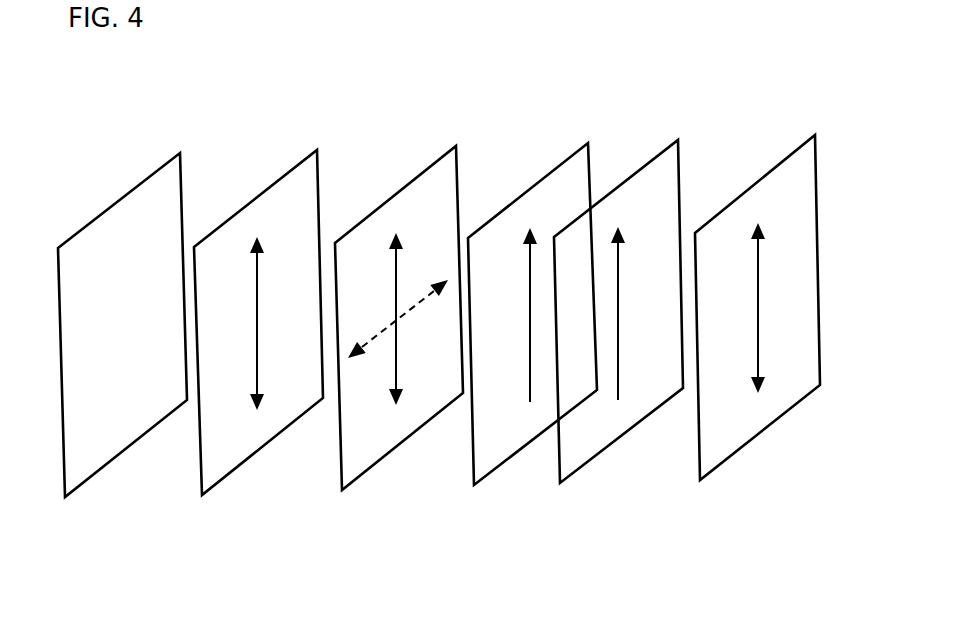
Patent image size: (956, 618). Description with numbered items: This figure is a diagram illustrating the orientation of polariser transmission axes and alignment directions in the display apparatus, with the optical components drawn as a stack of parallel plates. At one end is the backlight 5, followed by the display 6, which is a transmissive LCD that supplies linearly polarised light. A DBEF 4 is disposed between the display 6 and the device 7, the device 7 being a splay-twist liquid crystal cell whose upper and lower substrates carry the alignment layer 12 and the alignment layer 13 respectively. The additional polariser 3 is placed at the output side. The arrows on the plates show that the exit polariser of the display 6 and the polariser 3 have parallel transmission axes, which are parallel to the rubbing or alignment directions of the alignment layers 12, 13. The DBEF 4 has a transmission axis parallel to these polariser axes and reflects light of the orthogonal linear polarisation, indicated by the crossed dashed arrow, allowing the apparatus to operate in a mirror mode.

The backlight 5 is at (75, 465).
The display 6 is at (212, 460).
The DBEF 4 is at (352, 457).
The device 7 is at (575, 305).
The alignment layer 12 is at (485, 453).
The alignment layer 13 is at (570, 450).
The polariser 3 is at (710, 445).